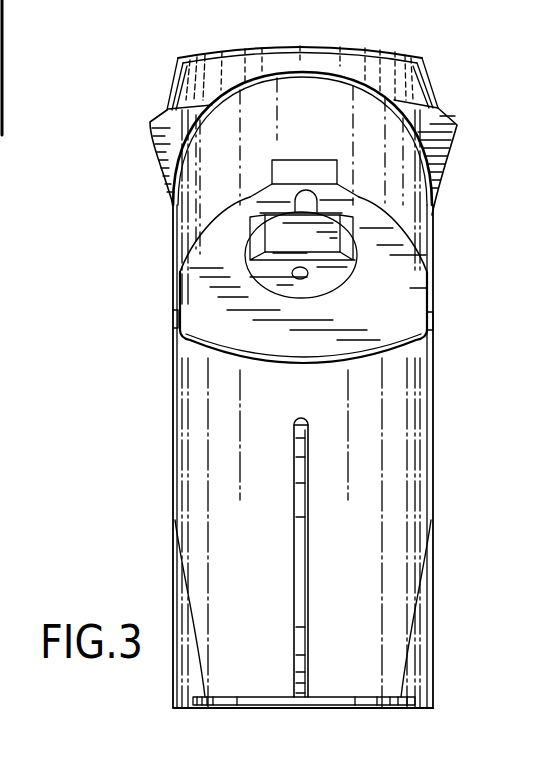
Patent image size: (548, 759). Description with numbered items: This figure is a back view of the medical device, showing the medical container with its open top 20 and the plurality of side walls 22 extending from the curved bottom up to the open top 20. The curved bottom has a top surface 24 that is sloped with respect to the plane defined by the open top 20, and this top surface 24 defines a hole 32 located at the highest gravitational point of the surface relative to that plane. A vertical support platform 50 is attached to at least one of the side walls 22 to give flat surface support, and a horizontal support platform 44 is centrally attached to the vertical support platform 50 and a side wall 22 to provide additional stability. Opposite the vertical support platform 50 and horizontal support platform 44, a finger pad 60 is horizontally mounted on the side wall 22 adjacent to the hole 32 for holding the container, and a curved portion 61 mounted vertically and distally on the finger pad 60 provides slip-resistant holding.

The open top 20 is at (190, 212).
The side walls 22 is at (410, 413).
The top surface 24 is at (410, 313).
The hole 32 is at (308, 274).
The horizontal support platform 44 is at (378, 697).
The vertical support platform 50 is at (307, 580).
The finger pad 60 is at (437, 127).
The curved portion 61 is at (413, 73).